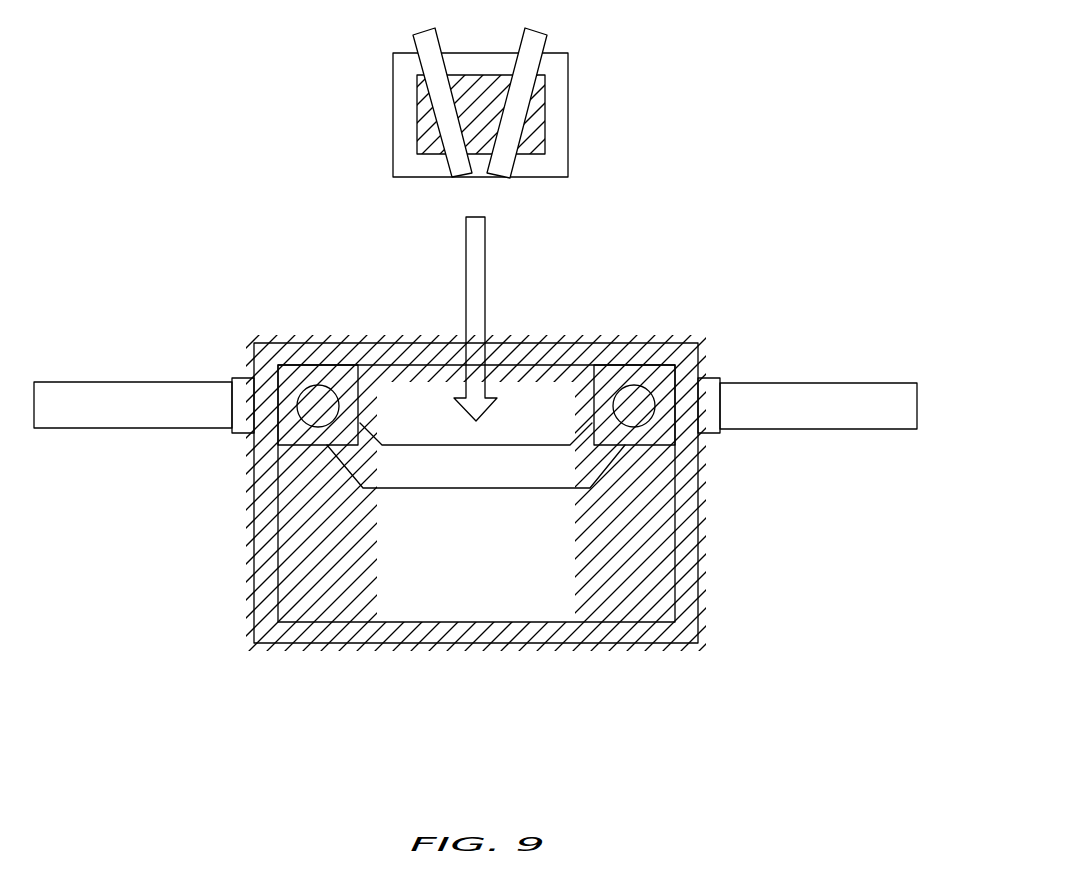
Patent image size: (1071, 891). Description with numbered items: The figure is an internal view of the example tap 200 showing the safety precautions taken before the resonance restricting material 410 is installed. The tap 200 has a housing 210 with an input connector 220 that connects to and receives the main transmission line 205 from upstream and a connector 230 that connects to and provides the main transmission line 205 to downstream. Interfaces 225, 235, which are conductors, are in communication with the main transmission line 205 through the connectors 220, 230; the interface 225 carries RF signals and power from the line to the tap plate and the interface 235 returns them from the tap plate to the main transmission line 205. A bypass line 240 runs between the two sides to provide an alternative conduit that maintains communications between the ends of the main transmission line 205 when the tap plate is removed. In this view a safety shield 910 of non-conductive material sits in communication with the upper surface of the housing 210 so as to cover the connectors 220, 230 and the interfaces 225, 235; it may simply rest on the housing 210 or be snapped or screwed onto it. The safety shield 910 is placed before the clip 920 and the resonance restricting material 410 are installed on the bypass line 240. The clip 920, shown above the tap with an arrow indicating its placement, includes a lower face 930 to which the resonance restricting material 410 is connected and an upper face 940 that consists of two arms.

The tap 200 is at (705, 703).
The main transmission line 205 is at (133, 382).
The housing 210 is at (428, 343).
The input connector 220 is at (246, 378).
The interface 225 is at (318, 395).
The connector 230 is at (706, 376).
The interface 235 is at (635, 388).
The bypass line 240 is at (469, 478).
The resonance restricting material 410 is at (537, 133).
The safety shield 910 is at (328, 603).
The clip 920 is at (366, 44).
The lower face 930 is at (407, 138).
The upper face 940 is at (538, 34).